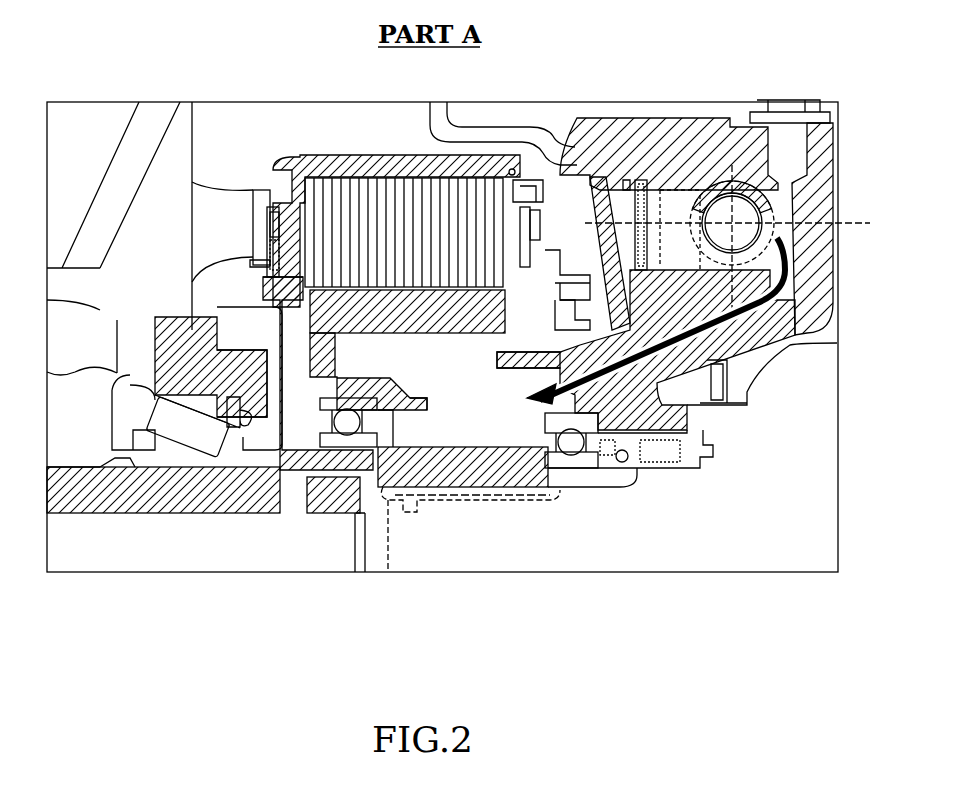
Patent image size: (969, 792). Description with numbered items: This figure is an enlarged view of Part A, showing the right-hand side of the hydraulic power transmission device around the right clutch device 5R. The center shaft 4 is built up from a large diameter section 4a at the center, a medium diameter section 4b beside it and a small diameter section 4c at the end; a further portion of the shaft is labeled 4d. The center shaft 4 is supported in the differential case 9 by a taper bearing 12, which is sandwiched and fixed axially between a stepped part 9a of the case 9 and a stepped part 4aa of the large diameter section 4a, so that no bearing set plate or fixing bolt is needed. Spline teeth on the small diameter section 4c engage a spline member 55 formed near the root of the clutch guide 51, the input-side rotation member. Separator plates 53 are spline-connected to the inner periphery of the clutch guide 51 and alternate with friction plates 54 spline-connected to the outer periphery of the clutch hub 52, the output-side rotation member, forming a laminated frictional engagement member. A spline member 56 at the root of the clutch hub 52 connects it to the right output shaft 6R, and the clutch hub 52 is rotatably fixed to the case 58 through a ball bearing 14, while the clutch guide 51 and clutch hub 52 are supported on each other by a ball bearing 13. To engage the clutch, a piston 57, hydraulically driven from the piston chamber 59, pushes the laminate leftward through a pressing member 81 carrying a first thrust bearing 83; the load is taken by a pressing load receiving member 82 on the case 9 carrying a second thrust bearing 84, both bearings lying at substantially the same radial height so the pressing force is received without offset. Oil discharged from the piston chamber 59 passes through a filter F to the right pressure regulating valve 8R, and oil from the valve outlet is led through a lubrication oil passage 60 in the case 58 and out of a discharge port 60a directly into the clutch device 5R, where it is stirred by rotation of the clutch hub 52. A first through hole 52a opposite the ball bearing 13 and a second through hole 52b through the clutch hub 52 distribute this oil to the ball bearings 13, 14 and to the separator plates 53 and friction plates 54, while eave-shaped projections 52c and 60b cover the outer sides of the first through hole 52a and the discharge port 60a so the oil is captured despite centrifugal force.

The center shaft 4 is at (203, 541).
The large diameter section 4a is at (95, 500).
The stepped part 4aa is at (81, 478).
The medium diameter section 4b is at (212, 500).
The small diameter section 4c is at (300, 500).
The case opening 4d is at (158, 564).
The right clutch device 5R is at (298, 138).
The right output shaft 6R is at (594, 542).
The right pressure regulating valve 8R is at (755, 205).
The differential case 9 is at (197, 332).
The stepped part 9a is at (242, 383).
The taper bearing 12 is at (150, 390).
The ball bearing 13 is at (282, 352).
The ball bearing 14 is at (548, 452).
The clutch guide 51 is at (371, 152).
The clutch hub 52 is at (432, 404).
The first through hole 52a is at (414, 427).
The second through hole 52b is at (218, 307).
The eave-shaped member 52c is at (437, 403).
The separator plates 53 is at (312, 195).
The friction plates 54 is at (322, 258).
The spline member 55 is at (354, 518).
The spline member 56 is at (455, 503).
The piston 57 is at (588, 180).
The case 58 is at (693, 143).
The piston chamber 59 is at (622, 180).
The lubrication oil passage 60 is at (760, 350).
The discharge port 60a is at (548, 382).
The eave-shaped member 60b is at (497, 362).
The pressing member 81 is at (534, 176).
The pressing load receiving member 82 is at (263, 182).
The first thrust bearing 83 is at (536, 236).
The second thrust bearing 84 is at (277, 235).
The filter F is at (640, 180).
The Part A is at (862, 222).